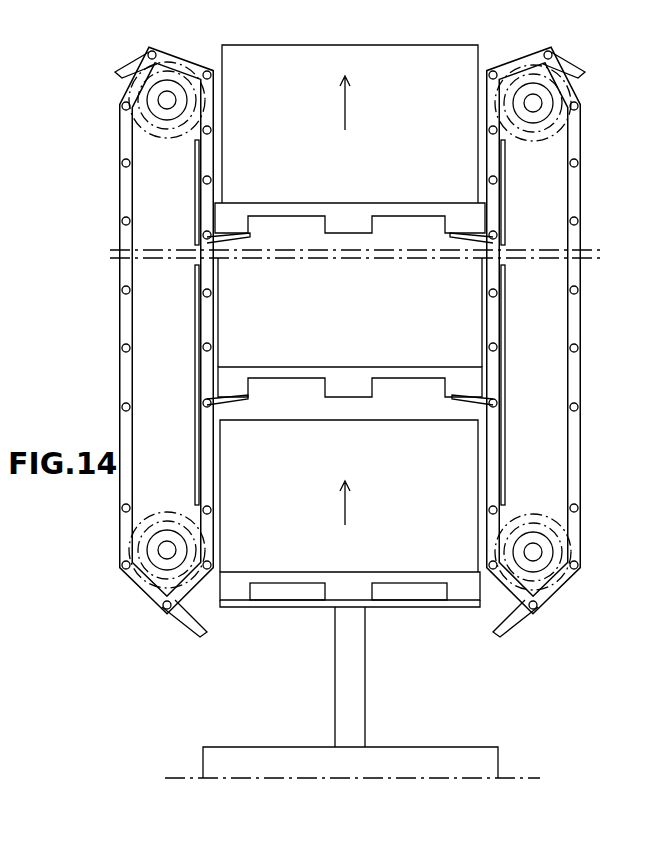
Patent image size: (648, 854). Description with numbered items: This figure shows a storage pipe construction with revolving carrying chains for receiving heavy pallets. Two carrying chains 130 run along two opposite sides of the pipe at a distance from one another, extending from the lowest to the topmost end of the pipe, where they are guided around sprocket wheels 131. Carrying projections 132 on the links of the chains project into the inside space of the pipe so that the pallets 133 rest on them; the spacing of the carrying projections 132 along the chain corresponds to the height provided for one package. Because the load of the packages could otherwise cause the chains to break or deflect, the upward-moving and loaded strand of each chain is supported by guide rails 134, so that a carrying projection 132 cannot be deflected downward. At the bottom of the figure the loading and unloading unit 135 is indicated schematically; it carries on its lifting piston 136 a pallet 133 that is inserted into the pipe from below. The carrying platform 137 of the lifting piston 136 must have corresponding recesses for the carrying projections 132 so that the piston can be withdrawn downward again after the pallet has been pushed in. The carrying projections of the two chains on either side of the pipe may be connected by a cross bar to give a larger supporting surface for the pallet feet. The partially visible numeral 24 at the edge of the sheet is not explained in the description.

The partial numeral (cropped) 24 is at (9, 110).
The carrying chain 130 is at (127, 382).
The sprocket wheel 131 is at (160, 550).
The carrying projection 132 is at (570, 80).
The pallet 133 is at (345, 380).
The guide rail 134 is at (196, 203).
The loading and unloading unit 135 is at (487, 762).
The lifting piston 136 is at (355, 695).
The carrying platform 137 is at (432, 607).